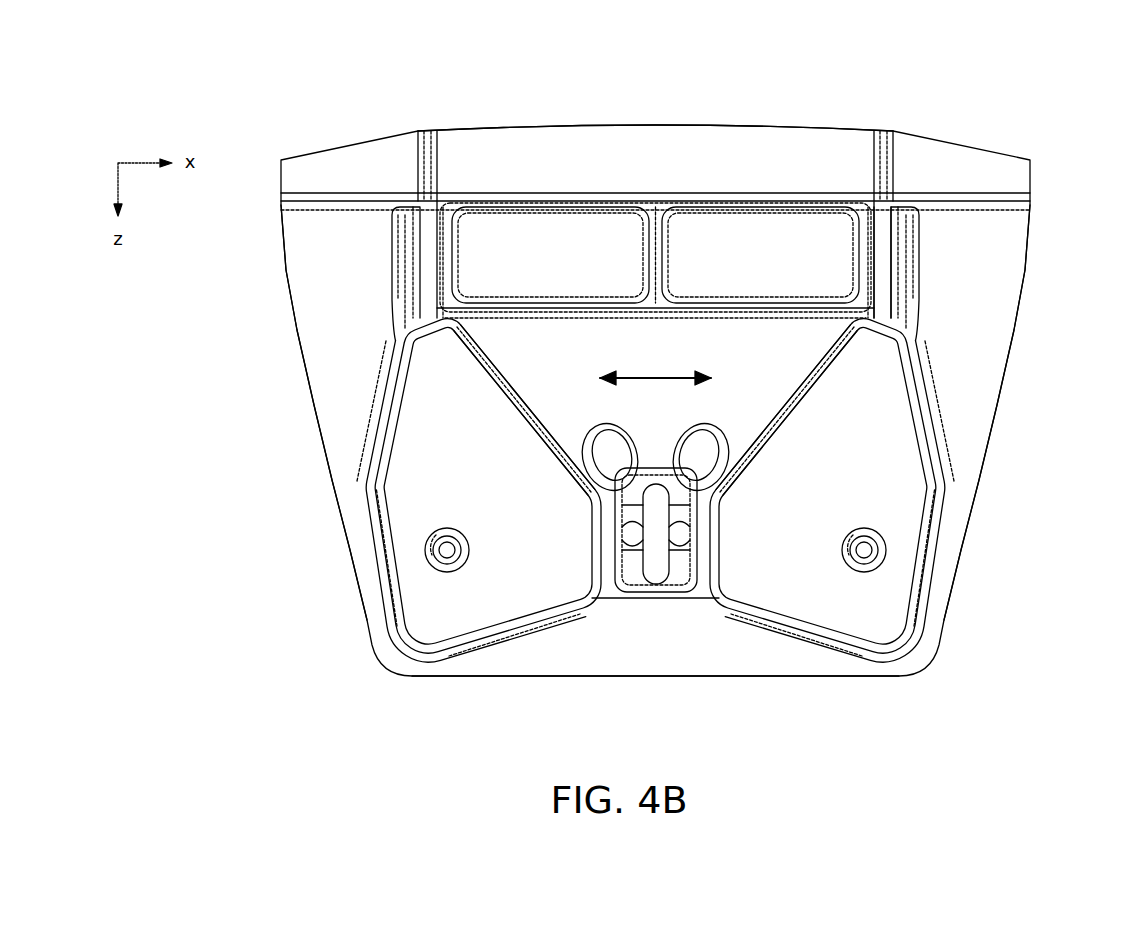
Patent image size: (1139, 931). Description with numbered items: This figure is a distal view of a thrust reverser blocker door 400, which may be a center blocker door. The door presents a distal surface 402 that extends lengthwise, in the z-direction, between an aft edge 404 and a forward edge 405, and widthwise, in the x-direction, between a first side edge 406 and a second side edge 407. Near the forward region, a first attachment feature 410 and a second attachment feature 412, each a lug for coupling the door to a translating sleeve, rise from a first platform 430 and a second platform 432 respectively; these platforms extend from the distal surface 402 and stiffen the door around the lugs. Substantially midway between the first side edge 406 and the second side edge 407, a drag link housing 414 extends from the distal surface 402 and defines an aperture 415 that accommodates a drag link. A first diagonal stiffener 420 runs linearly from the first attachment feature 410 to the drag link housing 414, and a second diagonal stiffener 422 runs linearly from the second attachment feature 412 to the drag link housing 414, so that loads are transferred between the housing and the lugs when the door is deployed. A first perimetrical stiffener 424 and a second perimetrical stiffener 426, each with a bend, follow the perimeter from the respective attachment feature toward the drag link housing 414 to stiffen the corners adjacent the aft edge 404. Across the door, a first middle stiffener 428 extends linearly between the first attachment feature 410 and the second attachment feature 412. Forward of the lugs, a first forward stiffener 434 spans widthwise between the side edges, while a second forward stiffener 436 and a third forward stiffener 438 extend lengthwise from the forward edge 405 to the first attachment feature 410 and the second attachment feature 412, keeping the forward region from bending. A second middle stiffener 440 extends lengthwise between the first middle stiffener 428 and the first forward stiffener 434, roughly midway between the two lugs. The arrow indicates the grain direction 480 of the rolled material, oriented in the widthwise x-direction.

The blocker door 400 is at (1027, 120).
The distal surface 402 is at (790, 504).
The aft edge 404 is at (655, 678).
The forward edge 405 is at (682, 127).
The first side edge 406 is at (330, 483).
The second side edge 407 is at (995, 421).
The first attachment feature 410 is at (420, 268).
The second attachment feature 412 is at (882, 264).
The drag link housing 414 is at (651, 466).
The aperture 415 is at (651, 535).
The first diagonal stiffener 420 is at (507, 414).
The second diagonal stiffener 422 is at (803, 411).
The first perimetrical stiffener 424 is at (391, 431).
The second perimetrical stiffener 426 is at (918, 395).
The first middle stiffener 428 is at (706, 306).
The first platform 430 is at (452, 238).
The second platform 432 is at (905, 281).
The first forward stiffener 434 is at (737, 192).
The second forward stiffener 436 is at (421, 136).
The third forward stiffener 438 is at (881, 140).
The second middle stiffener 440 is at (663, 250).
The grain direction 480 is at (650, 374).